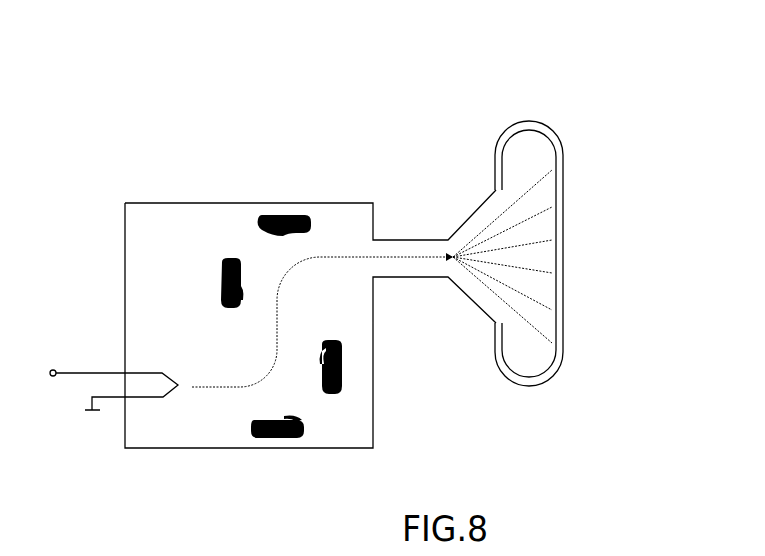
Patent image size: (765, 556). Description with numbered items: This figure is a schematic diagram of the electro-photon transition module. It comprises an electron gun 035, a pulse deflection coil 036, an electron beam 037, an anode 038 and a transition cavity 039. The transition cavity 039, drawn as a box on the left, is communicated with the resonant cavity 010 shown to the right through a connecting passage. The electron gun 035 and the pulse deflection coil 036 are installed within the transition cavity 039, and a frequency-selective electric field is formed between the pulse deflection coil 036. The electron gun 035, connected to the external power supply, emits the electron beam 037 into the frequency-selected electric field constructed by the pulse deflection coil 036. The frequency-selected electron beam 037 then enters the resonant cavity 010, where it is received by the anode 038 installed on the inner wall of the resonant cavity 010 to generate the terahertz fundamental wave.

The electron gun 035 is at (162, 373).
The pulse deflection coil 036 is at (297, 215).
The transition cavity 039 is at (350, 203).
The electron beam 037 is at (380, 257).
The resonant cavity 010 is at (533, 122).
The anode 038 is at (556, 207).